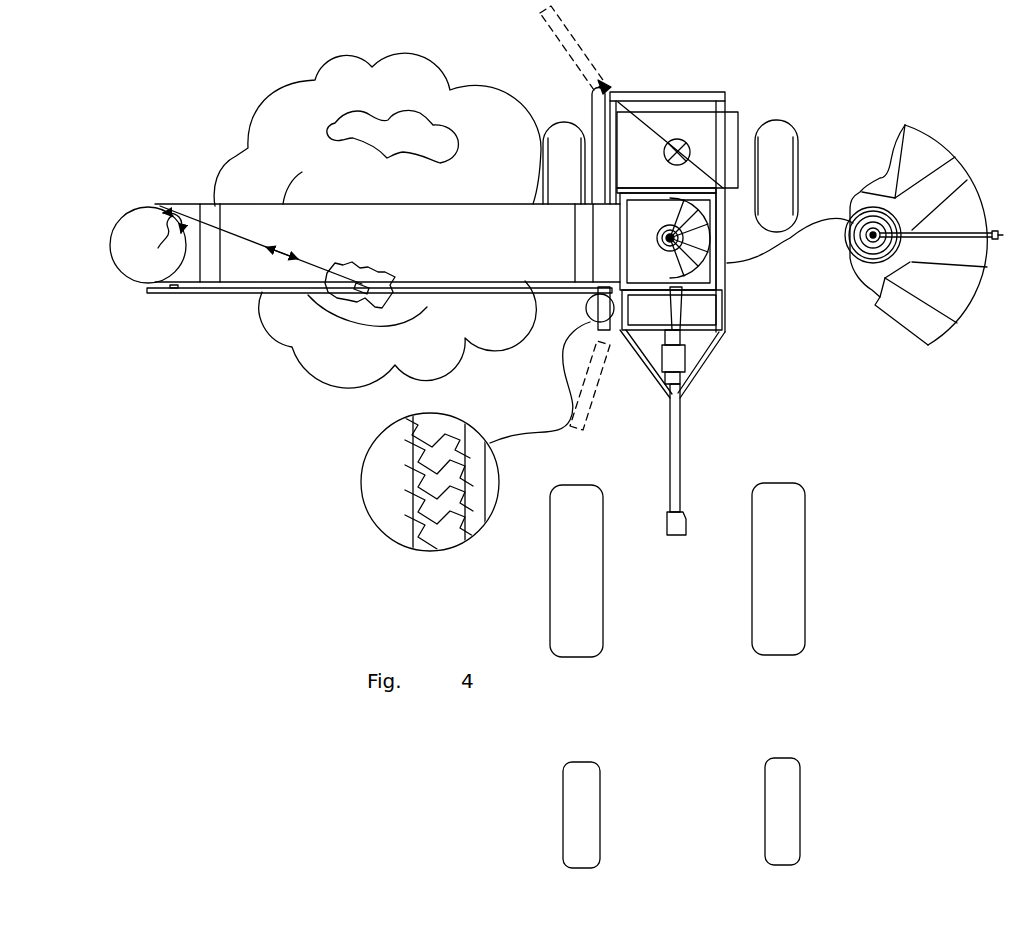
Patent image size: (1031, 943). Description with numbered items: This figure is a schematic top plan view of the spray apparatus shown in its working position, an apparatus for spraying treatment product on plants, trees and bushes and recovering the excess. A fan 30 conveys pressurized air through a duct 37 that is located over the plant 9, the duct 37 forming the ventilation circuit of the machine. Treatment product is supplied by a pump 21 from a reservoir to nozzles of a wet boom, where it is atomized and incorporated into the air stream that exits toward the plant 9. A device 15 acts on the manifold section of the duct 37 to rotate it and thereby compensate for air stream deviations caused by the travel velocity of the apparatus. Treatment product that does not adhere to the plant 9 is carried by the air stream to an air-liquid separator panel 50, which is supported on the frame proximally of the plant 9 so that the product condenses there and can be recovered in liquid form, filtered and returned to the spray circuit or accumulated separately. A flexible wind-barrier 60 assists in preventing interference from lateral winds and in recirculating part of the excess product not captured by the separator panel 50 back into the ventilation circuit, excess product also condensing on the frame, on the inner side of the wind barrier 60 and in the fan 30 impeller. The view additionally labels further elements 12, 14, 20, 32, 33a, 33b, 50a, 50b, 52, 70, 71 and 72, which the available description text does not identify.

The plant 9 is at (322, 59).
The wheels 12 is at (548, 124).
The base frame 14 is at (210, 298).
The device 15 is at (383, 276).
The tongue 20 is at (686, 313).
The pump 21 is at (689, 355).
The fan 30 is at (938, 302).
The fan axle 32 is at (968, 222).
The drive sheave 33a is at (622, 327).
The pivot direction arrow 33b is at (143, 204).
The duct 37 is at (233, 204).
The air-liquid separator panel 50 is at (612, 90).
The panel lowered position 50a is at (604, 412).
The panel raised position 50b is at (540, 25).
The tread detail 52 is at (371, 462).
The flexible wind-barrier 60 is at (648, 122).
The rear tires 70 is at (752, 570).
The front tires 71 is at (765, 778).
The pivot wheel 72 is at (148, 245).